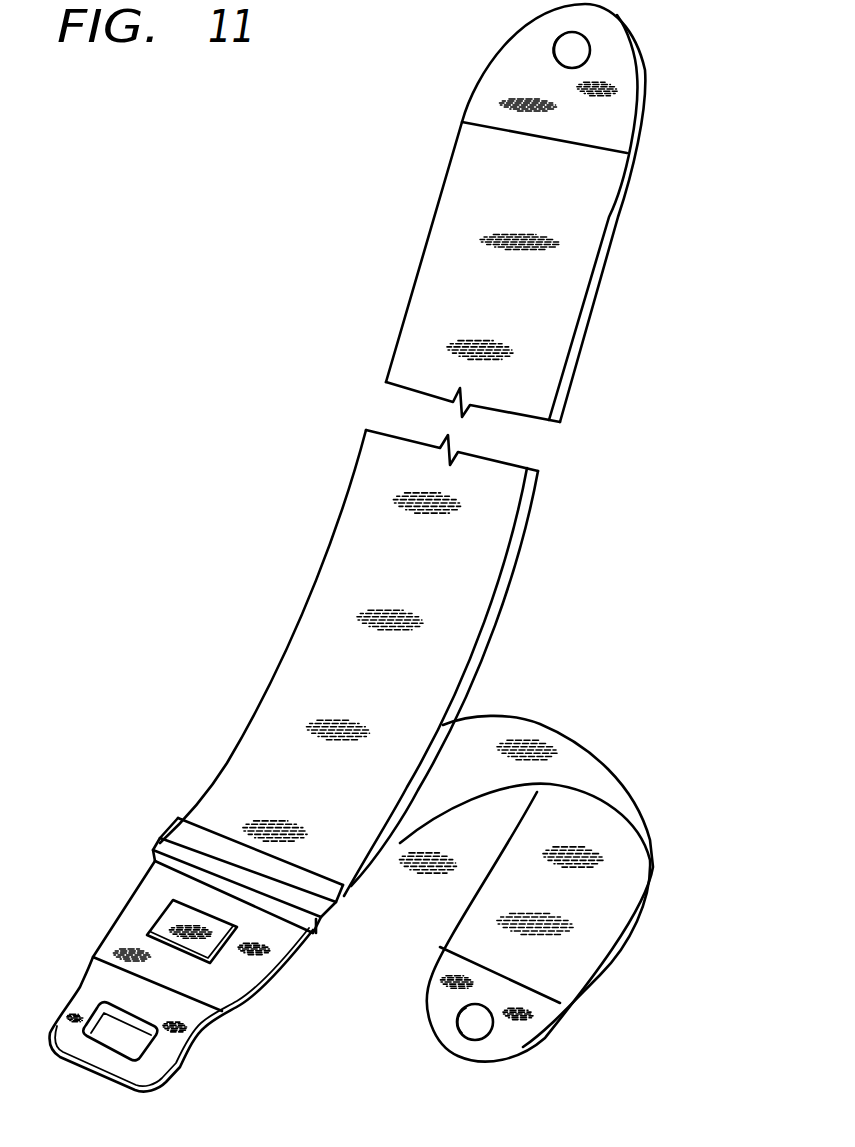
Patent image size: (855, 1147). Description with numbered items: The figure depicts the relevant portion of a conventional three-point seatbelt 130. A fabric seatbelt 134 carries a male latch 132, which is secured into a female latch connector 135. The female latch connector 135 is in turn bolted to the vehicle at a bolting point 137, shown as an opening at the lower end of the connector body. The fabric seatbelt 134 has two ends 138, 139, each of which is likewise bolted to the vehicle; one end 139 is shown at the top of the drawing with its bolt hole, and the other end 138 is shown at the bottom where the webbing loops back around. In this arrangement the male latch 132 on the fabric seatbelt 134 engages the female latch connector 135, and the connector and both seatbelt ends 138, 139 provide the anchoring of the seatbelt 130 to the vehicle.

The 3-point seatbelt 130 is at (583, 596).
The male latch 132 is at (178, 830).
The fabric seatbelt 134 is at (323, 616).
The female latch connector 135 is at (135, 903).
The bolting point 137 is at (130, 1045).
The first end of fabric seatbelt 138 is at (475, 1022).
The second end of fabric seatbelt 139 is at (572, 50).